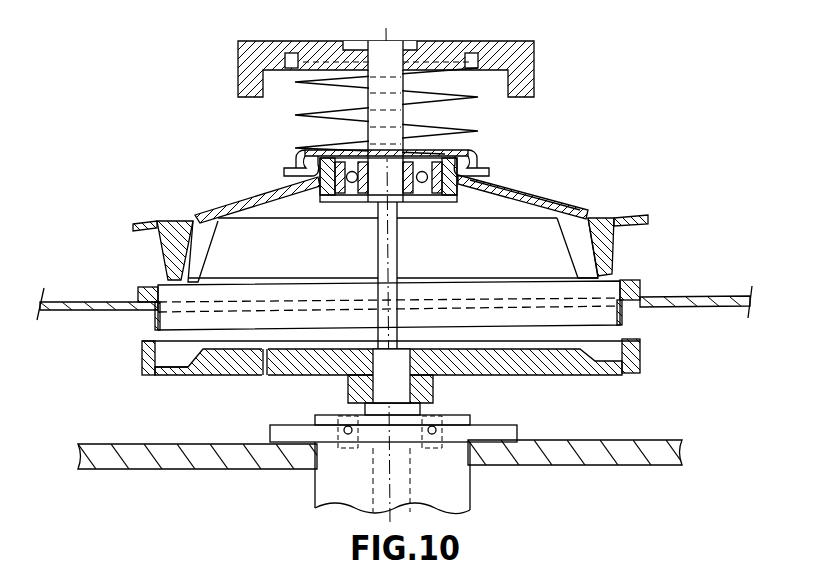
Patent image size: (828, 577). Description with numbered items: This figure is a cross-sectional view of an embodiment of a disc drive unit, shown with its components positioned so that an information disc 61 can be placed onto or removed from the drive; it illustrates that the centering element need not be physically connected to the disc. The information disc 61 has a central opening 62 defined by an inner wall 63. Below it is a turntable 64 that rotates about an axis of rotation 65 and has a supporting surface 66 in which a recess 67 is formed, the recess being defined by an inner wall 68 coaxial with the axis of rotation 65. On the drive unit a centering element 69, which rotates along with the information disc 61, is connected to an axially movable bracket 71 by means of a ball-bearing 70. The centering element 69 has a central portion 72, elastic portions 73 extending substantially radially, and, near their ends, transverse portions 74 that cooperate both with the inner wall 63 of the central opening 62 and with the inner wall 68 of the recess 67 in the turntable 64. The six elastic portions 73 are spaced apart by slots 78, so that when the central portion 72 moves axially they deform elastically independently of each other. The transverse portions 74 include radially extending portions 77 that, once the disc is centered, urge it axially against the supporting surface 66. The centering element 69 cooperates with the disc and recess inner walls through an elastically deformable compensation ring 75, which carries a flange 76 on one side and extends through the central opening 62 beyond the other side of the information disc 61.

The information disc 61 is at (701, 298).
The central opening 62 is at (247, 303).
The inner wall 63 is at (155, 317).
The turntable 64 is at (386, 372).
The axis of rotation 65 is at (390, 240).
The supporting surface 66 is at (633, 332).
The recess 67 is at (174, 358).
The inner wall 68 is at (152, 353).
The centering element 69 is at (556, 196).
The ball-bearing 70 is at (286, 178).
The bracket 71 is at (523, 42).
The central portion 72 is at (451, 194).
The elastic portions 73 is at (578, 208).
The transverse portions 74 is at (607, 238).
The compensation ring 75 is at (602, 313).
The flange 76 is at (155, 283).
The radially extending portions 77 is at (640, 213).
The slots 78 is at (504, 188).